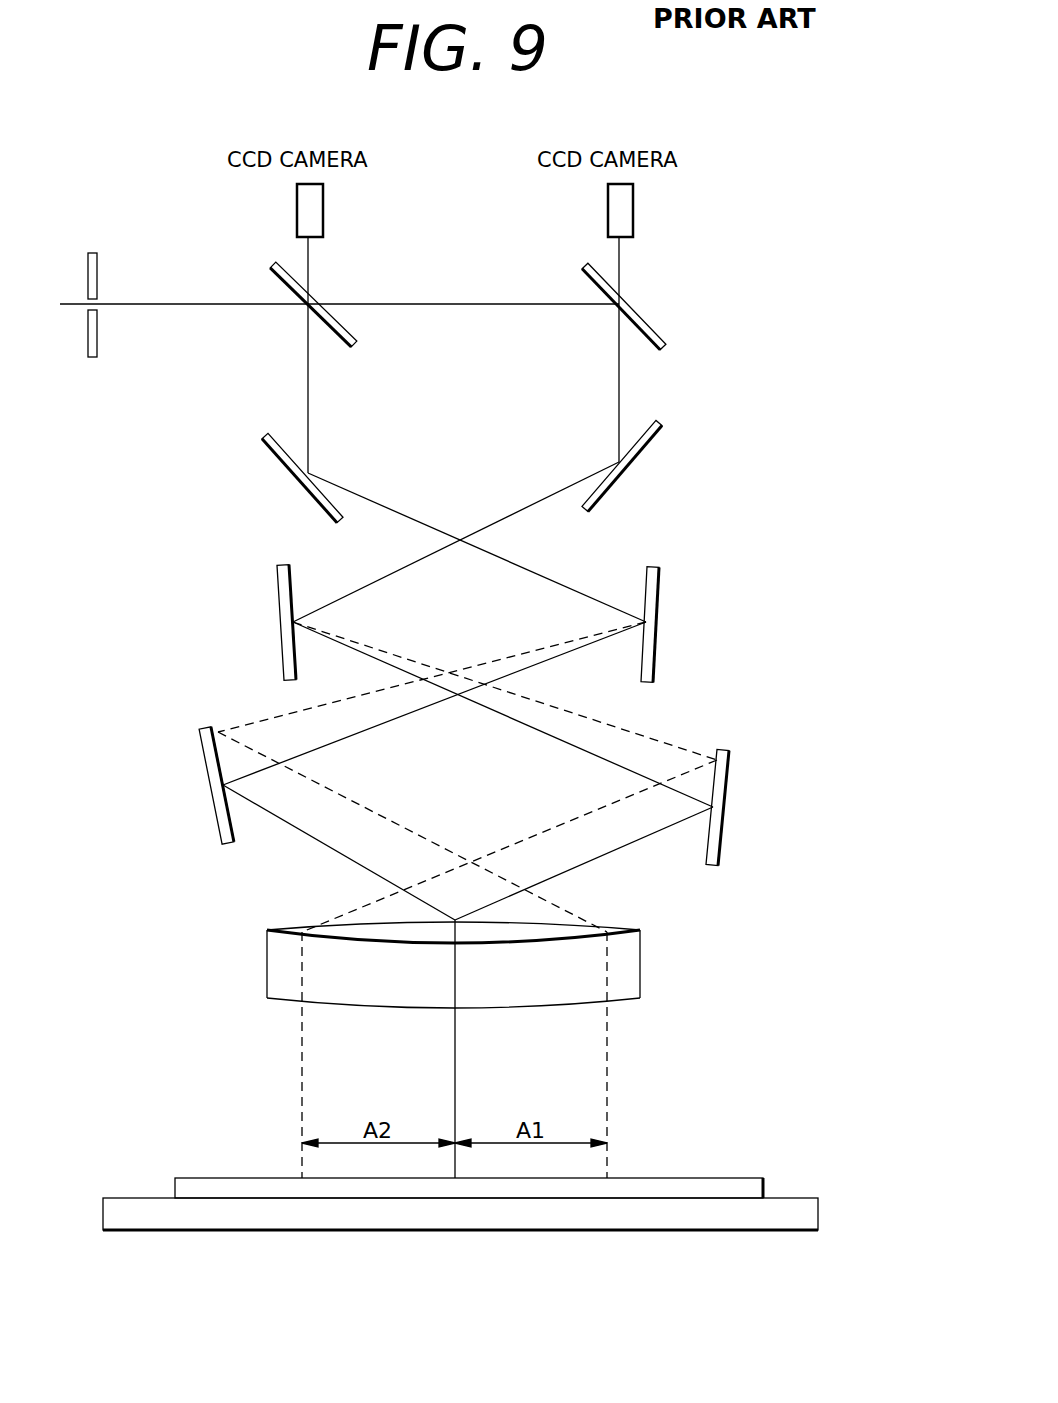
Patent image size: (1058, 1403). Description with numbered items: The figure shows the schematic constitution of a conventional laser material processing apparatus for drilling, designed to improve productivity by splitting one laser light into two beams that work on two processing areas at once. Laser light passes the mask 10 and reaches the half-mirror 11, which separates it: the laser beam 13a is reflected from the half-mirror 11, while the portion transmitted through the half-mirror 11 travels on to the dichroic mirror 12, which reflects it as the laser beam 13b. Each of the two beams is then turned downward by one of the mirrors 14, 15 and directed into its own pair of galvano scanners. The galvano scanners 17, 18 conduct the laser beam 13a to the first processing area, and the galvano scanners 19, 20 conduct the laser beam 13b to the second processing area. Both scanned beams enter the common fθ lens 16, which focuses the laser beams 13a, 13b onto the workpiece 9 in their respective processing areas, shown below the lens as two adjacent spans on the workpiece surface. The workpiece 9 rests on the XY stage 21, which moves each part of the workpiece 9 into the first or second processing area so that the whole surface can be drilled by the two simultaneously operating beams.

The workpiece 9 is at (720, 1192).
The mask 10 is at (97, 268).
The half-mirror 11 is at (356, 330).
The dichroic mirror 12 is at (666, 330).
The laser beam 13a is at (308, 366).
The laser beam 13b is at (619, 366).
The mirror 14 is at (294, 470).
The mirror 15 is at (638, 464).
The fθ lens 16 is at (641, 956).
The galvano scanner 17 is at (660, 602).
The galvano scanner 18 is at (208, 762).
The galvano scanner 19 is at (278, 601).
The galvano scanner 20 is at (731, 786).
The XY stage 21 is at (768, 1222).